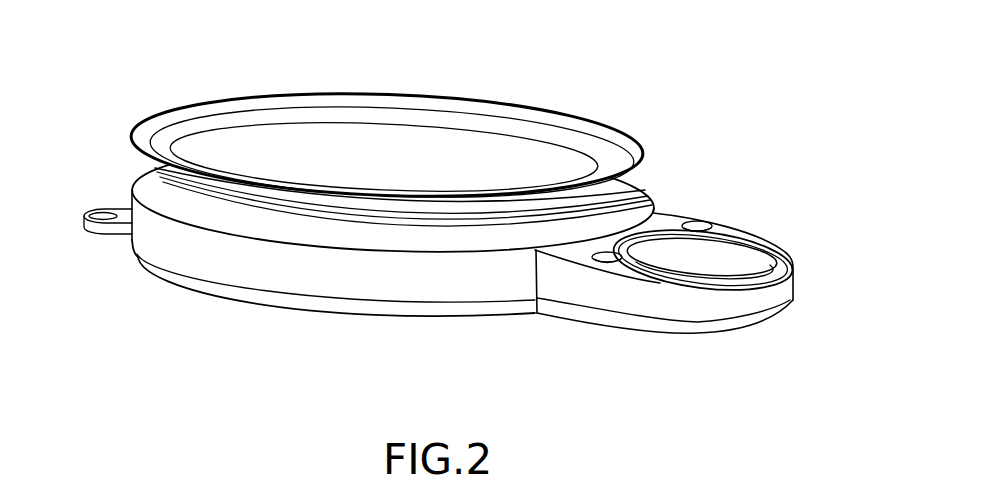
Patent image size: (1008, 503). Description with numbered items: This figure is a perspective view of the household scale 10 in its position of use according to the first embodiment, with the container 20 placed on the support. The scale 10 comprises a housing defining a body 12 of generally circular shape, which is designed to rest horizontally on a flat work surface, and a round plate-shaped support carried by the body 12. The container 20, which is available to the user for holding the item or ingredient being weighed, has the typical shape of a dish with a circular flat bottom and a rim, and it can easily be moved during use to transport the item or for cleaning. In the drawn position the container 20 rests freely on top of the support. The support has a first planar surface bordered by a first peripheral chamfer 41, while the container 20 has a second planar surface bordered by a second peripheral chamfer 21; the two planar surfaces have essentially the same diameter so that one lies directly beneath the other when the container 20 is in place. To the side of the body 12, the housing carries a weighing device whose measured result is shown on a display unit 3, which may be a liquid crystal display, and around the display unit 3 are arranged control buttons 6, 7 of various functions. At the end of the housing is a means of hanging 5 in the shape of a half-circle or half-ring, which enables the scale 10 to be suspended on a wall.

The household scale 10 is at (472, 261).
The container 20 is at (390, 124).
The second peripheral chamfer 21 is at (268, 110).
The first peripheral chamfer 41 is at (222, 216).
The body 12 is at (327, 315).
The display unit 3 is at (694, 253).
The means of hanging 5 is at (86, 236).
The control button 6 is at (600, 262).
The control button 7 is at (702, 220).